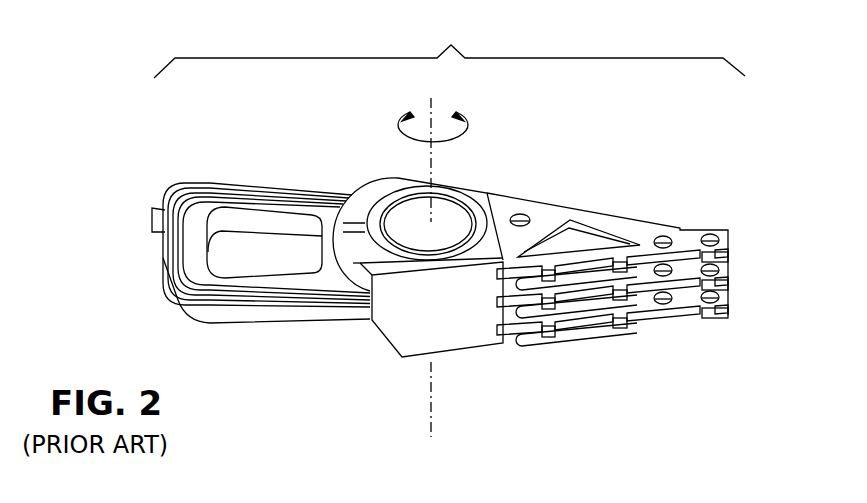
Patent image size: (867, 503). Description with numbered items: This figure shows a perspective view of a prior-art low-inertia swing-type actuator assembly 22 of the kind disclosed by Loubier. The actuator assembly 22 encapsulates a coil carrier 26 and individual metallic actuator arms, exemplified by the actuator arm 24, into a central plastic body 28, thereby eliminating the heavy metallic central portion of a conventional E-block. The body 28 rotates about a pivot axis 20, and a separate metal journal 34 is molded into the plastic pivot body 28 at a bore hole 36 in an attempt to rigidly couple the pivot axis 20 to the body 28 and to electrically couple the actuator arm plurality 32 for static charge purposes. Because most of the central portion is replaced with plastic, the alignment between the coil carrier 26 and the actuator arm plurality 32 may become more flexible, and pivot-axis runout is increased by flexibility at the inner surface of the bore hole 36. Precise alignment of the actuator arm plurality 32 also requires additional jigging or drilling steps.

The pivot axis 20 is at (432, 419).
The actuator assembly 22 is at (449, 47).
The actuator arm 24 is at (618, 215).
The coil carrier 26 is at (259, 183).
The central plastic body 28 is at (455, 323).
The actuator arm plurality 32 is at (755, 225).
The metal journal 34 is at (455, 190).
The bore hole 36 is at (468, 236).